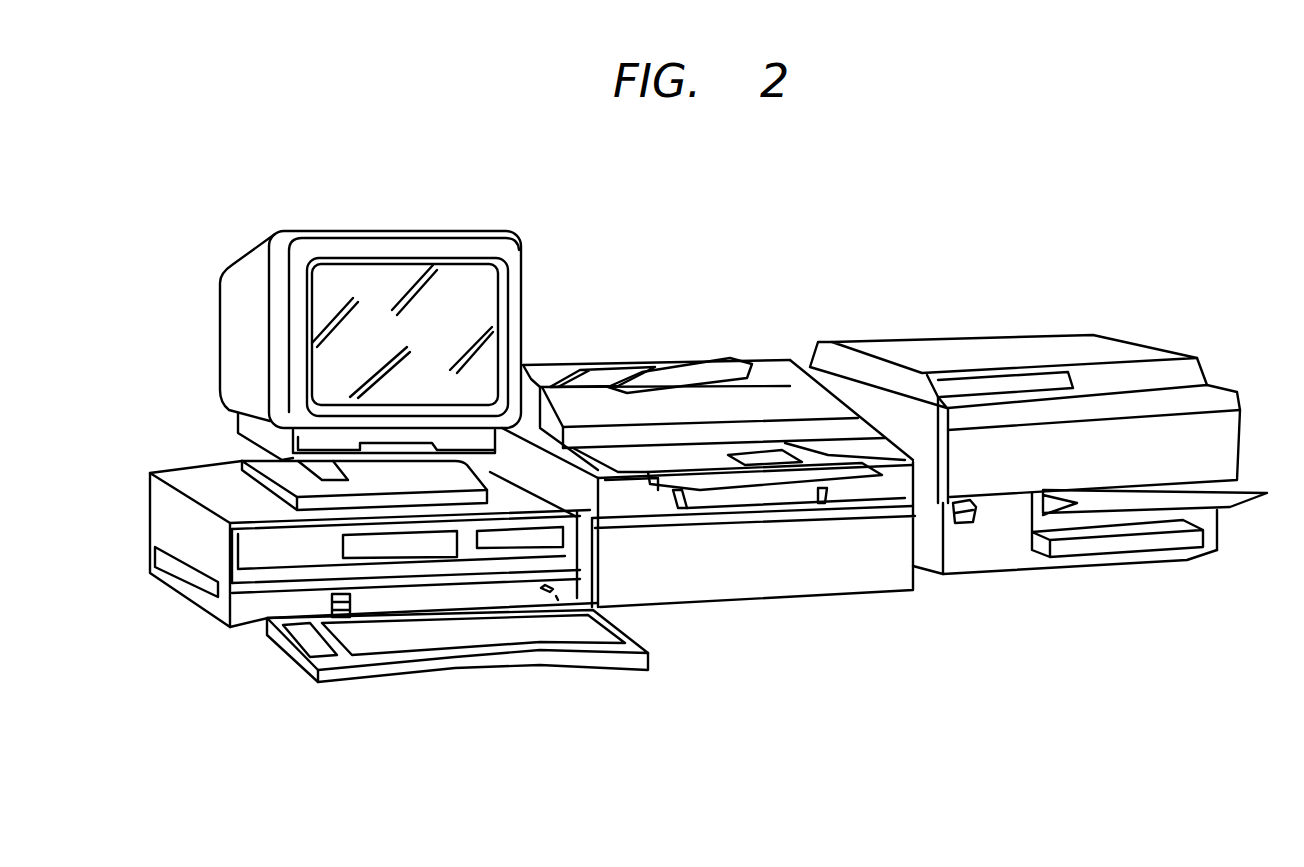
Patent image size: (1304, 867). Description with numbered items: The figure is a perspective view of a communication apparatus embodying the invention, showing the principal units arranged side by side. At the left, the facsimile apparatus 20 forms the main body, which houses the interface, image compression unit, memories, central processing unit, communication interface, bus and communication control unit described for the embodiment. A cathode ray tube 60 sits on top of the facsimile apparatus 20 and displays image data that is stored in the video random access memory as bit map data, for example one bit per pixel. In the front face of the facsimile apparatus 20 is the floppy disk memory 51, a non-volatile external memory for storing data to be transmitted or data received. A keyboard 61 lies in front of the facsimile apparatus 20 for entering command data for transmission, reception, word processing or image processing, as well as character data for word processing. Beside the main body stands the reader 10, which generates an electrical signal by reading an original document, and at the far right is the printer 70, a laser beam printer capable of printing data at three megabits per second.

The reader 10 is at (697, 373).
The facsimile apparatus 20 is at (207, 609).
The floppy disk memory 51 is at (562, 547).
The cathode ray tube 60 is at (410, 223).
The keyboard 61 is at (508, 678).
The printer 70 is at (1060, 333).